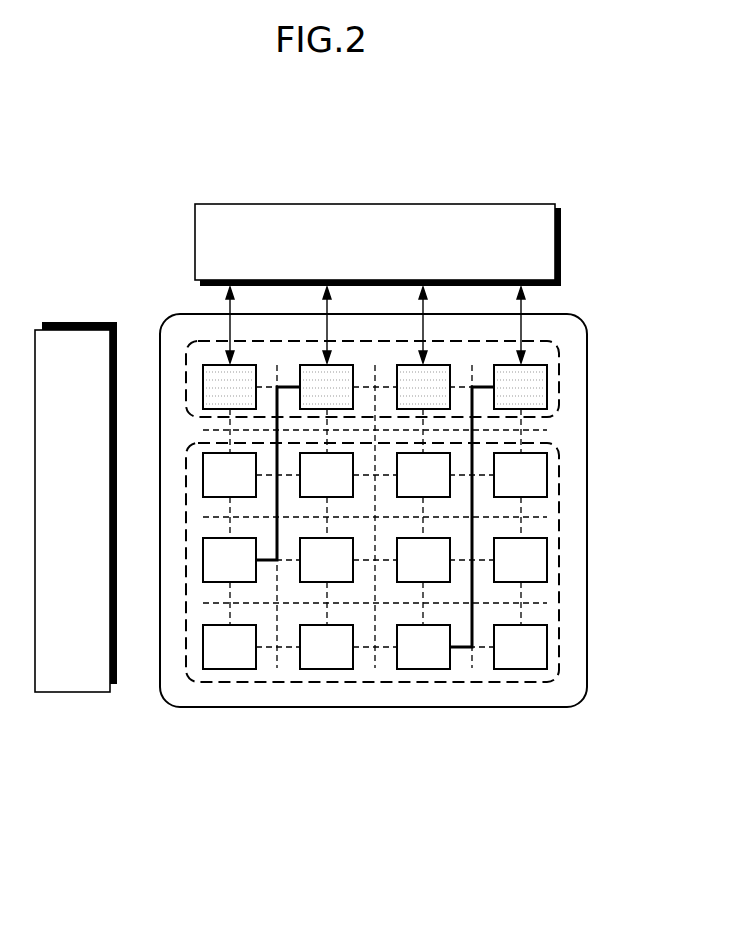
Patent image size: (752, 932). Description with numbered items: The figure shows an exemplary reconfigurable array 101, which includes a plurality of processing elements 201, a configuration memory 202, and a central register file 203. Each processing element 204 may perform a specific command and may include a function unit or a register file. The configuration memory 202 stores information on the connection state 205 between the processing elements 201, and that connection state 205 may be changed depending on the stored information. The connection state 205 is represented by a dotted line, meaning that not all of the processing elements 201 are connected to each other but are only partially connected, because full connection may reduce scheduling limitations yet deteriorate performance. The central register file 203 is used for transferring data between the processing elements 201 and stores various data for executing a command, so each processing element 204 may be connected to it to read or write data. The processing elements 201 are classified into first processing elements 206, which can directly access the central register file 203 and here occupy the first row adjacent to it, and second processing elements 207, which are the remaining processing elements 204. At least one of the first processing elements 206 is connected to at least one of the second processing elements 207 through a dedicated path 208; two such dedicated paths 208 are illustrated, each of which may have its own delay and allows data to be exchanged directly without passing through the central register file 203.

The reconfigurable array 101 is at (93, 137).
The plurality of processing elements 201 is at (205, 708).
The configuration memory 202 is at (76, 507).
The central register file 203 is at (378, 245).
The processing element 204 is at (315, 669).
The connection state 205 is at (373, 669).
The first processing elements 206 is at (560, 382).
The second processing elements 207 is at (560, 523).
The dedicated path 208 is at (463, 651).